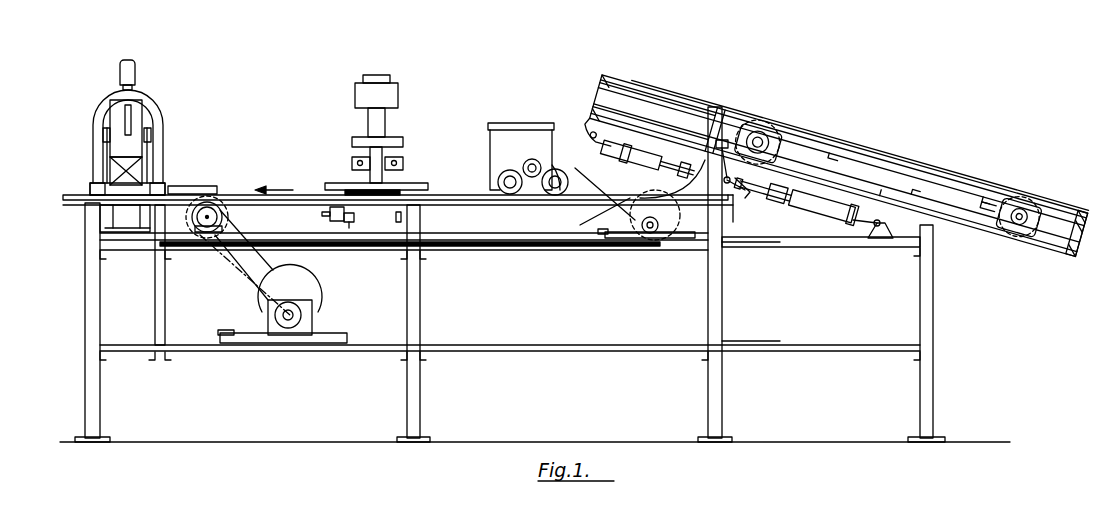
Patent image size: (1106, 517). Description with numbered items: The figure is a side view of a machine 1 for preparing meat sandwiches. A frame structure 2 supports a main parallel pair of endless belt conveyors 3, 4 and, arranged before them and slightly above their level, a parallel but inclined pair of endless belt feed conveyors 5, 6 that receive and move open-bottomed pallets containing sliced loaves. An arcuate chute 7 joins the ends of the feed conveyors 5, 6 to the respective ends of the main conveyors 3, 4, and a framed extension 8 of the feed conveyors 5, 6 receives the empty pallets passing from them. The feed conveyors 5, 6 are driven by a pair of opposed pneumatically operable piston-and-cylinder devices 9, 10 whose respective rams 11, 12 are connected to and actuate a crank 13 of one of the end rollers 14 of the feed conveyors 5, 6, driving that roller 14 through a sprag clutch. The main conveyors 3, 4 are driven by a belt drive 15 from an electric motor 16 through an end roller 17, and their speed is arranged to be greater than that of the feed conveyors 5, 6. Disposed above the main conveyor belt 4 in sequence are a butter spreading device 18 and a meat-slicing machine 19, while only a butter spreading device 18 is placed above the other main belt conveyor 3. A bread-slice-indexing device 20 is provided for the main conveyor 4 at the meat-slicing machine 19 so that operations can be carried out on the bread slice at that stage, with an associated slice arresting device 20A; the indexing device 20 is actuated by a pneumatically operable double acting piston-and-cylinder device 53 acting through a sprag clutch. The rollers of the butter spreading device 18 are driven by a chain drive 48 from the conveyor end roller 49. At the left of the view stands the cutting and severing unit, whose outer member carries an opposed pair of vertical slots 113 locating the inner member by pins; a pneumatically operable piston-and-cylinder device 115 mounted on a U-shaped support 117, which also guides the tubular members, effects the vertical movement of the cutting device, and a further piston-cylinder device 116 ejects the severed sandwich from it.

The machine 1 is at (452, 119).
The frame structure 2 is at (96, 306).
The endless belt conveyor 3 is at (398, 217).
The endless belt conveyor 4 is at (600, 217).
The endless belt feed conveyor 5 is at (824, 164).
The endless belt feed conveyor 6 is at (824, 164).
The arcuate chute 7 is at (665, 192).
The framed extension 8 is at (600, 100).
The piston-and-cylinder device 9 is at (606, 160).
The piston-and-cylinder device 10 is at (845, 216).
The ram 11 is at (712, 176).
The ram 12 is at (790, 202).
The crank 13 is at (747, 195).
The end roller 14 is at (770, 130).
The belt drive 15 is at (248, 279).
The electric motor 16 is at (308, 310).
The end roller 17 is at (206, 224).
The butter spreading device 18 is at (489, 139).
The meat-slicing machine 19 is at (402, 113).
The bread-slice-indexing device 20 is at (330, 211).
The slice arresting device 20A is at (437, 194).
The chain drive 48 is at (605, 195).
The conveyor end roller 49 is at (666, 226).
The piston-and-cylinder device 53 is at (345, 224).
The vertical slots 113 is at (137, 133).
The piston-and-cylinder device 115 is at (136, 72).
The piston-cylinder device 116 is at (201, 185).
The U-shaped support 117 is at (160, 104).